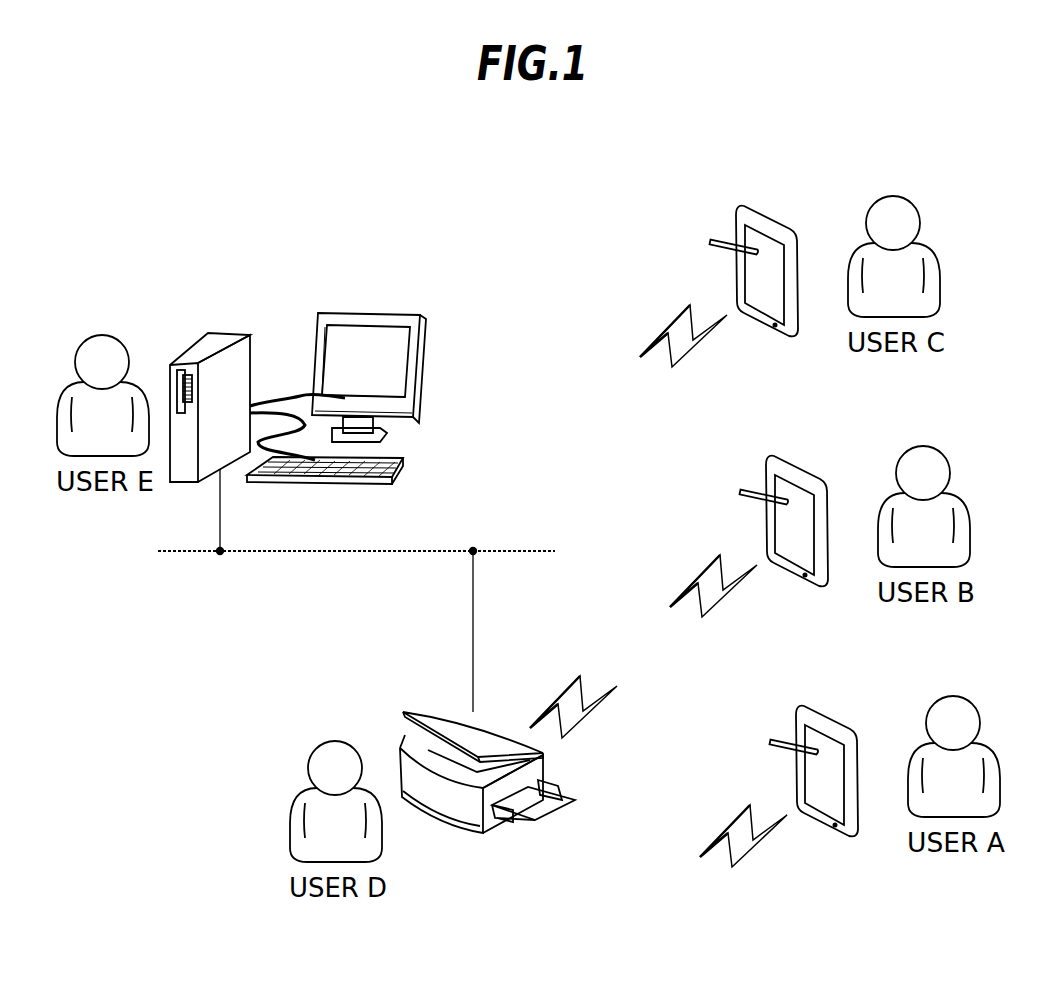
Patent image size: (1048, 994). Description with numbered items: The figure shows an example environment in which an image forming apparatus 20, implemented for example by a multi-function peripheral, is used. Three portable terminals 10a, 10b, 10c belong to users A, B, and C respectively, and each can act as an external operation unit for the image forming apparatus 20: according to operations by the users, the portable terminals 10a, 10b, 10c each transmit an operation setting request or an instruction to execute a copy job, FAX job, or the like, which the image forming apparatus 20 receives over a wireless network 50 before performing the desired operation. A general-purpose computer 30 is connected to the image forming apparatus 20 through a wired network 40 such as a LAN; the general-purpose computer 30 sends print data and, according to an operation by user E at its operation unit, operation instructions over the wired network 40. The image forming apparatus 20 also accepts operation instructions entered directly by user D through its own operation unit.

The portable terminal 10a is at (797, 717).
The portable terminal 10b is at (767, 467).
The portable terminal 10c is at (737, 217).
The image forming apparatus 20 is at (447, 708).
The general-purpose computer 30 is at (238, 331).
The wired network 40 is at (437, 551).
The wireless network 50 is at (565, 703).